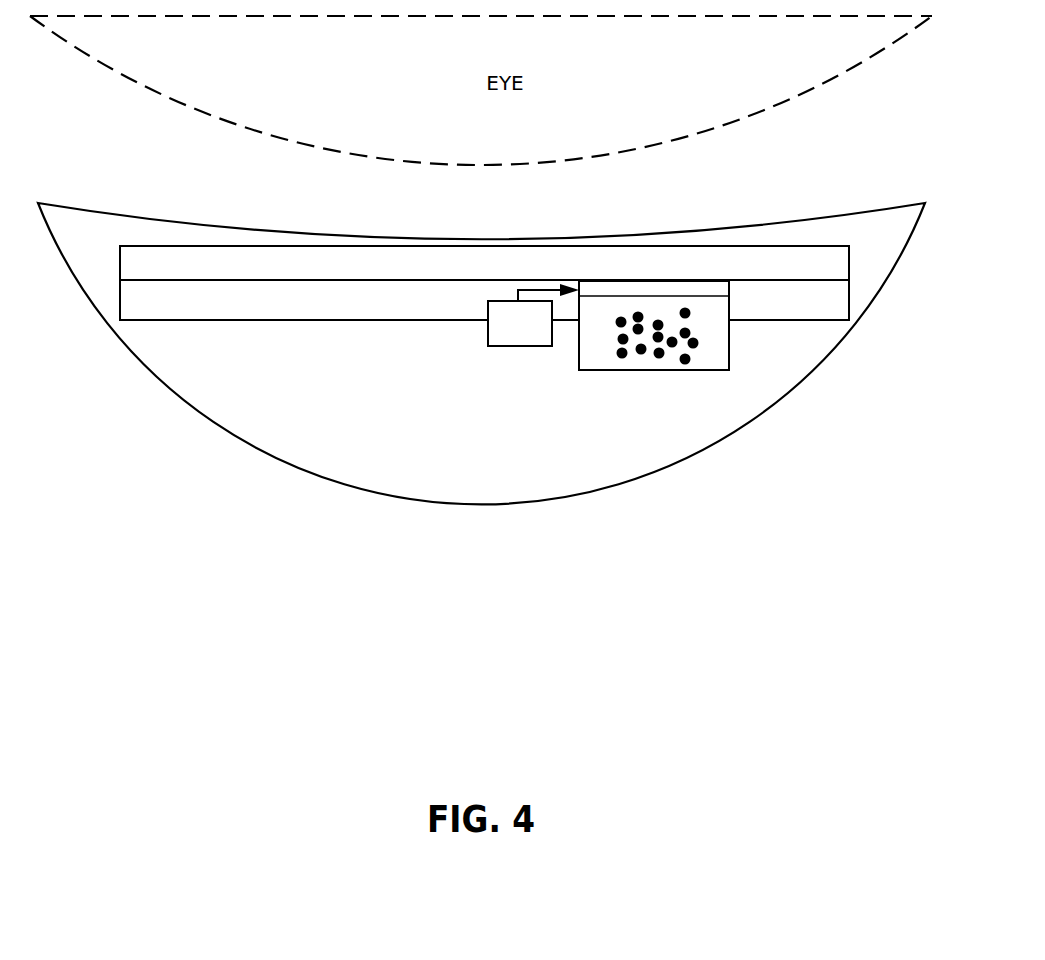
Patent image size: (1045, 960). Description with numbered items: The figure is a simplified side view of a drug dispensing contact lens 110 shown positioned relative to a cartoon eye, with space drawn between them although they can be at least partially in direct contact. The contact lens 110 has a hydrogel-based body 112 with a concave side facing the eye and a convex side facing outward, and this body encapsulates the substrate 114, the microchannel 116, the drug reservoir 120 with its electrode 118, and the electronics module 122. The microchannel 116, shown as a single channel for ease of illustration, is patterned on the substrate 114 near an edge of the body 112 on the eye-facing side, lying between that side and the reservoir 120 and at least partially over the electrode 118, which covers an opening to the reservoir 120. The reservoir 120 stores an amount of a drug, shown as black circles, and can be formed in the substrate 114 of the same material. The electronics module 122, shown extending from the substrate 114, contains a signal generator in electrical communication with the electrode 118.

The contact lens 110 is at (493, 380).
The body 112 is at (655, 450).
The substrate 114 is at (820, 301).
The microchannel 116 is at (813, 271).
The electrode 118 is at (722, 290).
The reservoir 120 is at (713, 347).
The electronics module 122 is at (533, 315).